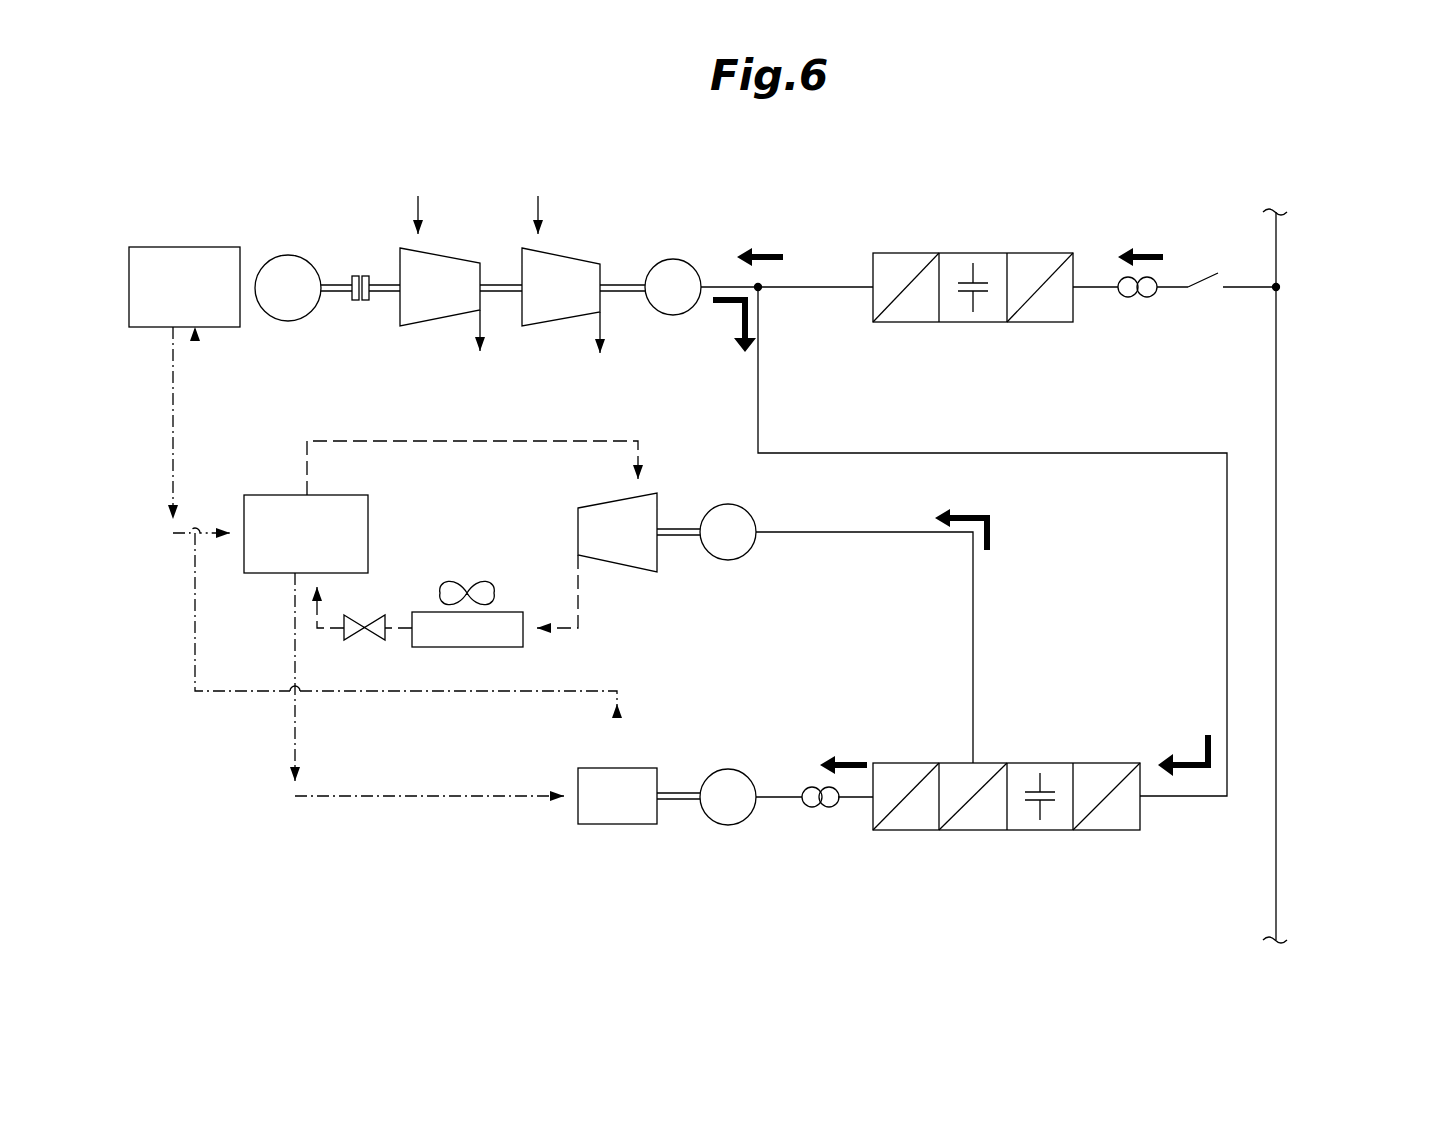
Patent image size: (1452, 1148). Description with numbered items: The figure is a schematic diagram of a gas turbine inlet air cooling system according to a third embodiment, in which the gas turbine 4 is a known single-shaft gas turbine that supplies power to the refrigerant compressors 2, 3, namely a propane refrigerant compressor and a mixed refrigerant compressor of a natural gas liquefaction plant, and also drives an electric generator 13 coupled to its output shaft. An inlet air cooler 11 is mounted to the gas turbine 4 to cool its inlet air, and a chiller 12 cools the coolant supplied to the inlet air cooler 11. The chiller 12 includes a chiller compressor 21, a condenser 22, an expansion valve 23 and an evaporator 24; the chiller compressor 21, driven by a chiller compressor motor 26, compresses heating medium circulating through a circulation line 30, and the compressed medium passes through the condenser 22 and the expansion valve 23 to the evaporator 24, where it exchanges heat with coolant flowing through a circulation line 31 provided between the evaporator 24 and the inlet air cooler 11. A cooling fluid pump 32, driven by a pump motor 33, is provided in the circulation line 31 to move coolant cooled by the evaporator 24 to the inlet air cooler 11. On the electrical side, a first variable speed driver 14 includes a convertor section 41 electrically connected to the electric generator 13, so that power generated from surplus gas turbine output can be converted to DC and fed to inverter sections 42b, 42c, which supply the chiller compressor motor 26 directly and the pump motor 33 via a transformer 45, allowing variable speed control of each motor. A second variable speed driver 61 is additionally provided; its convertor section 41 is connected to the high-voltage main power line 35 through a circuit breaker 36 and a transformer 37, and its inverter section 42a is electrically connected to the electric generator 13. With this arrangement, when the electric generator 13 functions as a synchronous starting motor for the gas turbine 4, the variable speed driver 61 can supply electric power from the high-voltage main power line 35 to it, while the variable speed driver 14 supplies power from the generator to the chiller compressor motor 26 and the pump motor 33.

The refrigerant compressor 2 is at (455, 258).
The refrigerant compressor 3 is at (583, 261).
The gas turbine 4 is at (300, 257).
The inlet air cooler 11 is at (195, 247).
The chiller 12 is at (345, 415).
The electric generator 13 is at (680, 260).
The variable speed driver 14 is at (1006, 802).
The chiller compressor 21 is at (628, 572).
The condenser 22 is at (492, 647).
The expansion valve 23 is at (370, 618).
The evaporator 24 is at (368, 531).
The chiller compressor motor 26 is at (744, 511).
The circulation line 30 is at (545, 440).
The circulation line 31 is at (193, 672).
The cooling fluid pump 32 is at (640, 824).
The pump motor 33 is at (745, 775).
The high-voltage main power line 35 is at (1278, 335).
The circuit breaker 36 is at (1200, 274).
The transformer 37 is at (1128, 300).
The convertor section 41 is at (1040, 322).
The inverter section 42a is at (903, 322).
The inverter section 42b is at (1000, 830).
The inverter section 42c is at (903, 830).
The transformer 45 is at (812, 808).
The variable speed driver 61 is at (973, 289).